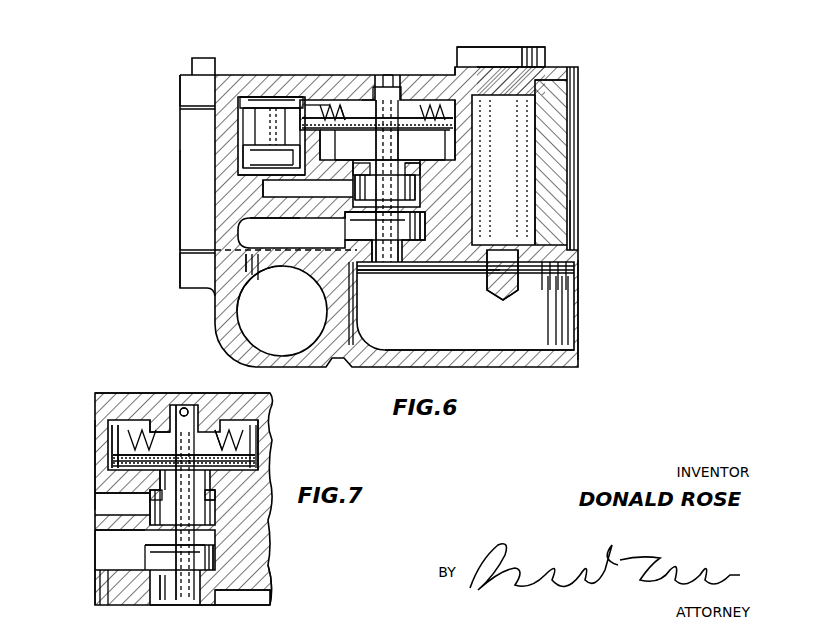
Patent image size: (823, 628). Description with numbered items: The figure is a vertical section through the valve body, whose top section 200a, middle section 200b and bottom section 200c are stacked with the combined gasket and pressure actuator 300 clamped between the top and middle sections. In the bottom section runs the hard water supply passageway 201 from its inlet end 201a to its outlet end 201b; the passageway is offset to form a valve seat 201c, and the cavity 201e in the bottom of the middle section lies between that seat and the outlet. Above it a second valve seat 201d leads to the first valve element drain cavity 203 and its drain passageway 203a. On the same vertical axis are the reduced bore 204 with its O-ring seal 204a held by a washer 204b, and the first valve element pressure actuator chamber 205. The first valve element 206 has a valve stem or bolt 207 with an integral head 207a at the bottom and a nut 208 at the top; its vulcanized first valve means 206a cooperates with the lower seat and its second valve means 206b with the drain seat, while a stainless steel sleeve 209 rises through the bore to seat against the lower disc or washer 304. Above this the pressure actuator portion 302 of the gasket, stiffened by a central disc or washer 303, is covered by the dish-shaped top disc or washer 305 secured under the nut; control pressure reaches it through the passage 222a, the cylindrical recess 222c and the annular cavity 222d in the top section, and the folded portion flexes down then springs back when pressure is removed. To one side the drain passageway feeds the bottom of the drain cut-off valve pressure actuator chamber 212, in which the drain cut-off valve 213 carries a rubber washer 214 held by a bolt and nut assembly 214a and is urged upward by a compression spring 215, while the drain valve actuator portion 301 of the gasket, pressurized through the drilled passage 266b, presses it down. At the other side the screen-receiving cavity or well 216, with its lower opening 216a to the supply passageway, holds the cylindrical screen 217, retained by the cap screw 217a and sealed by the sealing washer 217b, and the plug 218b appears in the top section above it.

In FIG. 6, the top section 200a is at (178, 93).
In FIG. 7, the top section 200a is at (274, 400).
In FIG. 6, the middle section 200b is at (178, 195).
In FIG. 7, the middle section 200b is at (274, 454).
In FIG. 6, the bottom section 200c is at (191, 269).
In FIG. 7, the bottom section 200c is at (279, 572).
In FIG. 6, the hard water supply passageway 201 is at (421, 326).
In FIG. 7, the hard water supply passageway 201 is at (207, 590).
In FIG. 6, the inlet end 201a is at (580, 297).
In FIG. 6, the outlet end 201b is at (238, 322).
In FIG. 6, the valve seat 201c is at (410, 270).
In FIG. 7, the valve seat 201c is at (217, 586).
In FIG. 6, the valve seat 201d is at (346, 236).
In FIG. 7, the valve seat 201d is at (150, 536).
In FIG. 6, the cavity 201e is at (285, 220).
In FIG. 7, the cavity 201e is at (100, 542).
In FIG. 6, the first valve element drain cavity 203 is at (362, 192).
In FIG. 7, the first valve element drain cavity 203 is at (160, 505).
In FIG. 6, the drain passageway 203a is at (265, 197).
In FIG. 7, the drain passageway 203a is at (98, 505).
In FIG. 6, the reduced bore 204 is at (376, 162).
In FIG. 7, the reduced bore 204 is at (152, 494).
In FIG. 6, the O-ring seal 204a is at (418, 172).
In FIG. 7, the O-ring seal 204a is at (216, 491).
In FIG. 6, the washer 204b is at (414, 194).
In FIG. 7, the washer 204b is at (216, 503).
In FIG. 6, the first valve element pressure actuator chamber 205 is at (456, 148).
In FIG. 7, the first valve element pressure actuator chamber 205 is at (114, 457).
In FIG. 6, the first valve element 206 is at (395, 90).
In FIG. 7, the first valve element 206 is at (193, 420).
In FIG. 6, the first valve means 206a is at (360, 241).
In FIG. 7, the first valve means 206a is at (168, 574).
In FIG. 6, the second valve means 206b is at (422, 223).
In FIG. 7, the second valve means 206b is at (226, 547).
In FIG. 6, the valve stem or bolt 207 is at (397, 136).
In FIG. 6, the integral head 207a is at (388, 247).
In FIG. 6, the nut 208 is at (389, 90).
In FIG. 6, the sleeve 209 is at (392, 152).
In FIG. 6, the drain cut-off valve pressure actuator chamber 212 is at (242, 156).
In FIG. 6, the drain cut-off valve 213 is at (248, 130).
In FIG. 6, the rubber washer 214 is at (300, 160).
In FIG. 6, the bolt and nut assembly 214a is at (276, 175).
In FIG. 6, the compression spring 215 is at (258, 180).
In FIG. 6, the screen-receiving cavity or well 216 is at (534, 190).
In FIG. 6, the lower opening 216a is at (505, 272).
In FIG. 6, the screen 217 is at (542, 226).
In FIG. 6, the cap screw 217a is at (506, 50).
In FIG. 6, the sealing washer 217b is at (537, 65).
In FIG. 6, the plug 218b is at (500, 76).
In FIG. 7, the passage 222a is at (184, 408).
In FIG. 6, the cylindrical recess 222c is at (365, 97).
In FIG. 6, the annular cavity 222d is at (318, 108).
In FIG. 6, the drilled passage 266b is at (268, 103).
In FIG. 6, the combined gasket and pressure actuator 300 is at (552, 112).
In FIG. 7, the combined gasket and pressure actuator 300 is at (272, 432).
In FIG. 6, the drain valve actuator portion 301 is at (272, 100).
In FIG. 6, the pressure actuator portion 302 is at (448, 100).
In FIG. 7, the pressure actuator portion 302 is at (112, 434).
In FIG. 7, the central disc or washer 303 is at (155, 425).
In FIG. 6, the lower disc or washer 304 is at (458, 128).
In FIG. 7, the lower disc or washer 304 is at (240, 470).
In FIG. 6, the top disc or washer 305 is at (350, 120).
In FIG. 7, the top disc or washer 305 is at (213, 448).